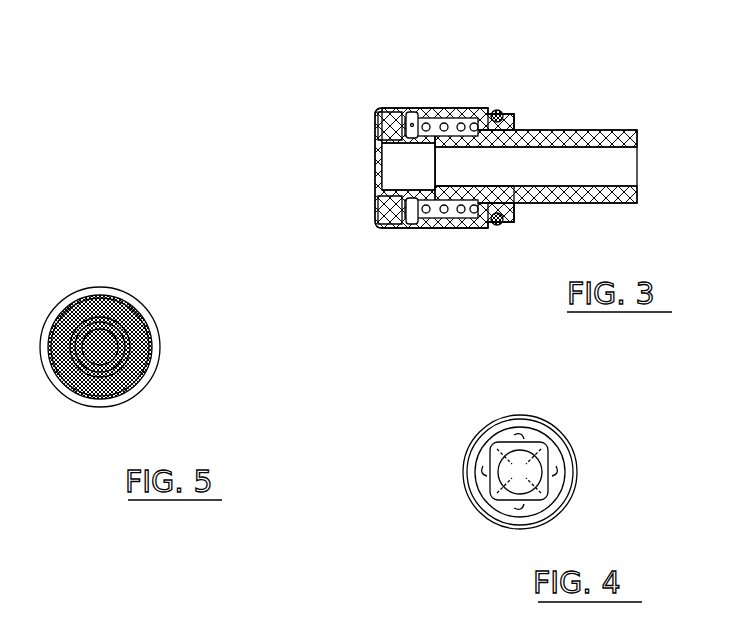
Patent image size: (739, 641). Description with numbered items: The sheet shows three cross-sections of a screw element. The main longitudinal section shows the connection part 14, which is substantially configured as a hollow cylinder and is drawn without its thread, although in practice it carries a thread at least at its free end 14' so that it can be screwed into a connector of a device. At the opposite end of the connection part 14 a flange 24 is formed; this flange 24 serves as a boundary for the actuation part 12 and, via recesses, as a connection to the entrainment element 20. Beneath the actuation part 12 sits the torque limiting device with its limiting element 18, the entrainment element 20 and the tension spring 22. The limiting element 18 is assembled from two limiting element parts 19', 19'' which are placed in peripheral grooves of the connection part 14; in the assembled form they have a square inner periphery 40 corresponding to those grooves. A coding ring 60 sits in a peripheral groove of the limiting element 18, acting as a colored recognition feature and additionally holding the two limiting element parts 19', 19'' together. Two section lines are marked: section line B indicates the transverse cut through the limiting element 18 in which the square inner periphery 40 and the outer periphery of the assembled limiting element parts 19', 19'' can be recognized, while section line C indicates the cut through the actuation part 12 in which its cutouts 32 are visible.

In FIG. 3, the actuation part 12 is at (453, 112).
In FIG. 5, the actuation part 12 is at (130, 292).
In FIG. 3, the connection part 14 is at (580, 178).
In FIG. 3, the free end 14' is at (618, 85).
In FIG. 3, the limiting element 18 is at (505, 125).
In FIG. 4, the limiting element part 19' is at (480, 472).
In FIG. 4, the limiting element part 19'' is at (573, 472).
In FIG. 3, the entrainment element 20 is at (413, 110).
In FIG. 3, the tension spring 22 is at (450, 228).
In FIG. 3, the flange 24 is at (378, 126).
In FIG. 5, the cutouts 32 is at (78, 290).
In FIG. 4, the square inner periphery 40 is at (525, 478).
In FIG. 3, the coding ring 60 is at (501, 112).
In FIG. 3, the section line B- B is at (484, 112).
In FIG. 3, the section line C- C is at (388, 108).